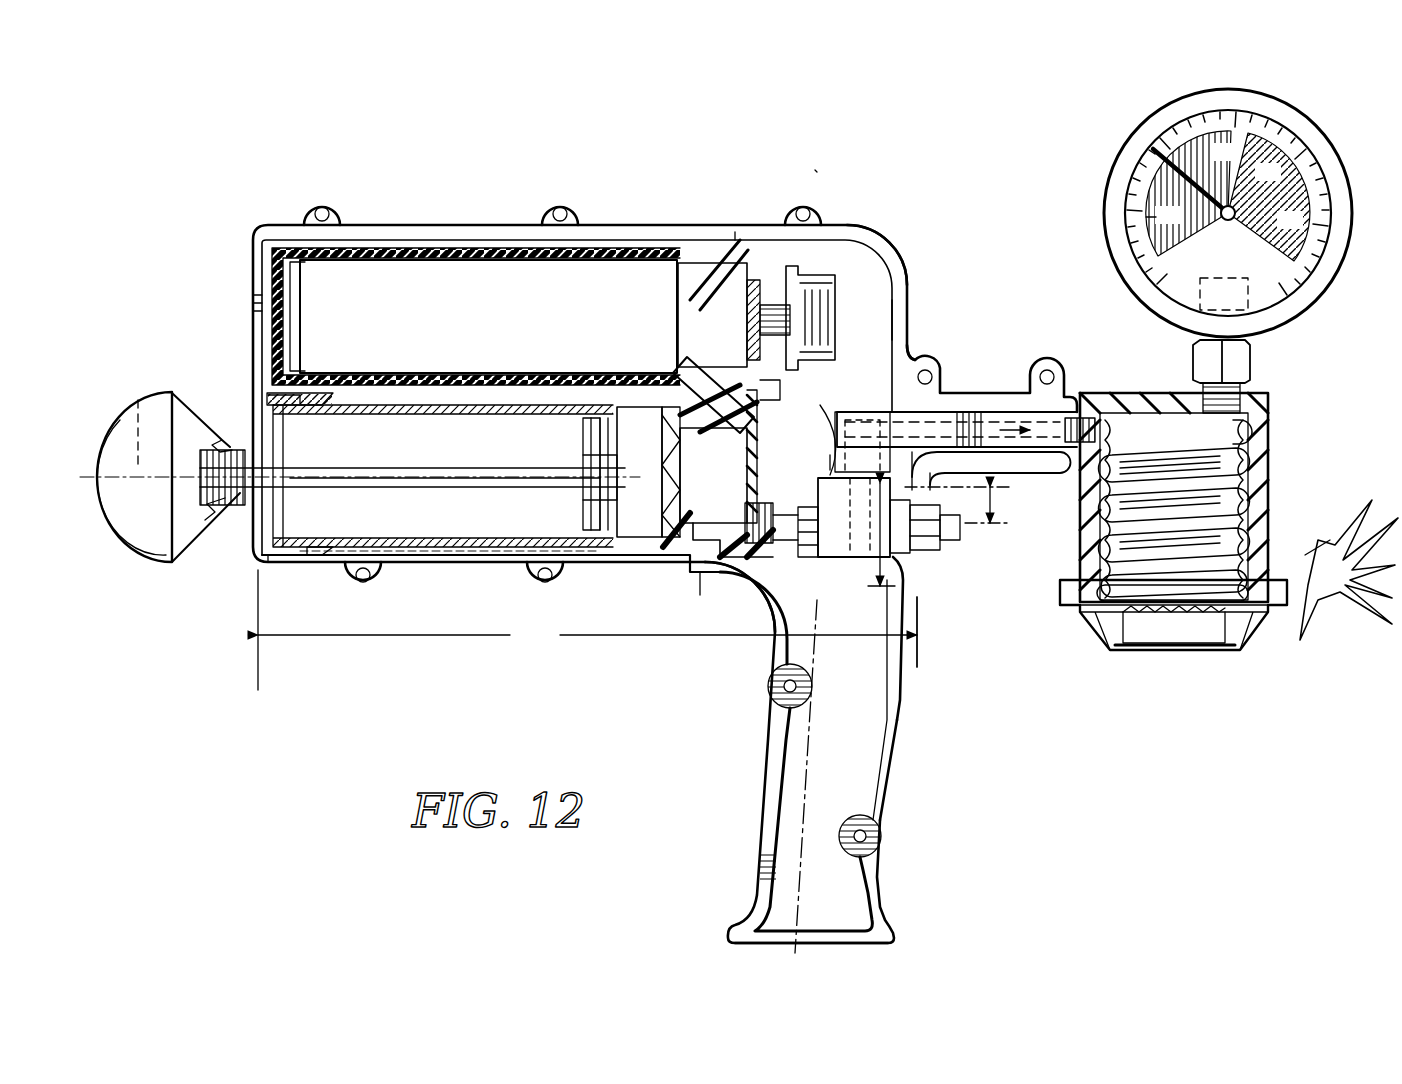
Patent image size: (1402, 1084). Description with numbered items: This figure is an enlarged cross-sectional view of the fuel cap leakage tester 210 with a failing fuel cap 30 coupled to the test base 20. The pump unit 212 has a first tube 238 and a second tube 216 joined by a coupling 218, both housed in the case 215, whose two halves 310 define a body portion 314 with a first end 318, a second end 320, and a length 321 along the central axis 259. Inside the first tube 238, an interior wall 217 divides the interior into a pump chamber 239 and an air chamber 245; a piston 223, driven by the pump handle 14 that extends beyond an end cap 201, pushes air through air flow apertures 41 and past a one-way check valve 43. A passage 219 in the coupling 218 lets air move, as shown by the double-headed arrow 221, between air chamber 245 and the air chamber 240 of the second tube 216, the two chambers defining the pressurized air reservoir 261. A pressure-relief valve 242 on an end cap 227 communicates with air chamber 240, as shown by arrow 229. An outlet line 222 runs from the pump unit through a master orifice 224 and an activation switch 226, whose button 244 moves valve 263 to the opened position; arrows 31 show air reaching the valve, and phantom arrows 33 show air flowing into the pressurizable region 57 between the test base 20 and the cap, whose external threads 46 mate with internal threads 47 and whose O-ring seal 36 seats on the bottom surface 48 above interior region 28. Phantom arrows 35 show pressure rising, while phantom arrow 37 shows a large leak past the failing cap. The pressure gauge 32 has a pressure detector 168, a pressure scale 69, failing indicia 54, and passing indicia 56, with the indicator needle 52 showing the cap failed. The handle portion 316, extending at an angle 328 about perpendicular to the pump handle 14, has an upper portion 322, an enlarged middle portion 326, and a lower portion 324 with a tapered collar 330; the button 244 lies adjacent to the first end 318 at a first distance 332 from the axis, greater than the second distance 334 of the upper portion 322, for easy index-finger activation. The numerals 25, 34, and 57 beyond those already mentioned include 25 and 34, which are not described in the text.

The pump handle 14 is at (300, 495).
The test base 20 is at (1272, 490).
The battery cells 25 is at (310, 272).
The interior region 28 is at (1165, 585).
The fuel cap 30 is at (1250, 652).
The arrows 31 is at (776, 505).
The pressure gauge 32 is at (1100, 246).
The phantom arrows 33 is at (988, 428).
The gauge fitting nut 34 is at (1190, 358).
The phantom arrows 35 is at (1112, 420).
The O-ring seal 36 is at (1272, 622).
The phantom arrow 37 is at (1308, 540).
The air flow apertures 41 is at (703, 560).
The one-way check valve 43 is at (662, 452).
The external threads 46 is at (1242, 530).
The internal threads 47 is at (1242, 464).
The bottom surface 48 is at (1070, 622).
The indicator needle 52 is at (1140, 170).
The failing indicia 54 is at (1178, 196).
The passing indicia 56 is at (1285, 197).
The pressurizable region 57 is at (1138, 410).
The pressure scale 69 is at (1280, 132).
The pressure detector 168 is at (1200, 296).
The end cap 201 is at (272, 390).
The fuel cap leakage tester 210 is at (815, 168).
The pump unit 212 is at (740, 232).
The case 215 is at (858, 222).
The second tube 216 is at (410, 246).
The interior wall 217 is at (685, 486).
The coupling 218 is at (782, 400).
The passage 219 is at (690, 368).
The double-headed arrow 221 is at (703, 418).
The outlet line 222 is at (805, 583).
The piston 223 is at (620, 548).
The master orifice 224 is at (810, 478).
The activation switch 226 is at (905, 495).
The end cap 227 is at (790, 262).
The arrow 229 is at (742, 318).
The first tube 238 is at (445, 552).
The pump chamber 239 is at (325, 435).
The air chamber 240 is at (462, 298).
The pressure-relief valve 242 is at (825, 270).
The button 244 is at (958, 540).
The air chamber 245 is at (683, 595).
The central axis 259 is at (140, 410).
The pressurized air reservoir 261 is at (692, 248).
The valve 263 is at (836, 774).
The case halves 310 is at (337, 225).
The body portion 314 is at (870, 345).
The handle portion 316 is at (757, 722).
The first end 318 is at (925, 352).
The second end 320 is at (256, 325).
The length 321 is at (587, 630).
The upper portion 322 is at (919, 608).
The lower portion 324 is at (835, 905).
The middle portion 326 is at (858, 744).
The angle 328 is at (812, 433).
The tapered collar 330 is at (885, 930).
The first distance 332 is at (1012, 497).
The second distance 334 is at (898, 580).